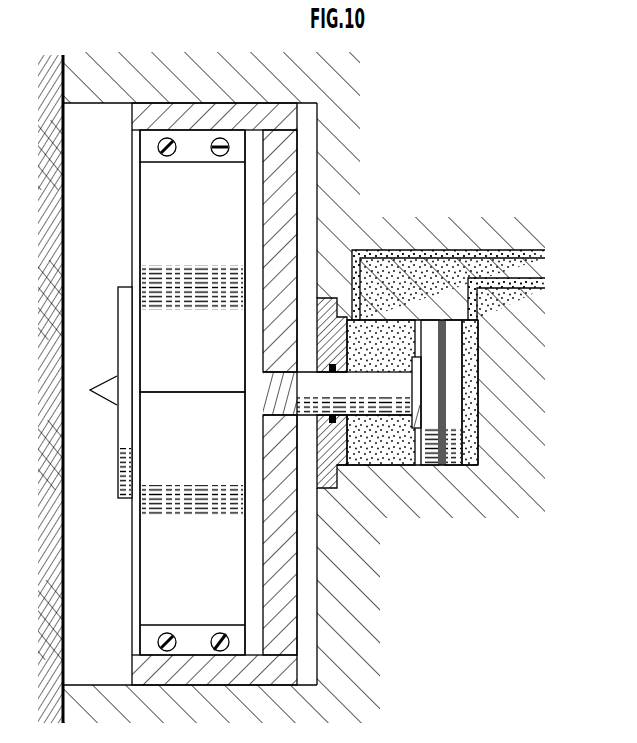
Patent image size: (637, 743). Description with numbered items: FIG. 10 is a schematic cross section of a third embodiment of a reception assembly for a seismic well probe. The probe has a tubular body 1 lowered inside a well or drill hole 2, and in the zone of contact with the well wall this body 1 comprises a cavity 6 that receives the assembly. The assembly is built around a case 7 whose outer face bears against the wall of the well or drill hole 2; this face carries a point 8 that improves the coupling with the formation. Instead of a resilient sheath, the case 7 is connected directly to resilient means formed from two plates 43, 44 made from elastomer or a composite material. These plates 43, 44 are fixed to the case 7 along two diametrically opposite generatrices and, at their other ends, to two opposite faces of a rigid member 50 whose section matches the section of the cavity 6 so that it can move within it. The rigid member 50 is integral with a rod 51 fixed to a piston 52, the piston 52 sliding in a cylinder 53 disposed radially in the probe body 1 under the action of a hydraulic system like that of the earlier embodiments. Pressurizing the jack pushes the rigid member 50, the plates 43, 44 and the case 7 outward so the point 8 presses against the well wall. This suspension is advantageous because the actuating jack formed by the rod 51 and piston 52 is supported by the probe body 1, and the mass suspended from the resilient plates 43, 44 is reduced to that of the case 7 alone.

The tubular body 1 is at (163, 78).
The well or drill hole 2 is at (64, 52).
The cavity 6 is at (98, 659).
The case 7 is at (127, 300).
The point 8 is at (103, 383).
The plate 43 is at (155, 203).
The plate 44 is at (152, 547).
The rigid member 50 is at (142, 117).
The rod 51 is at (378, 403).
The piston 52 is at (447, 432).
The cylinder 53 is at (473, 453).